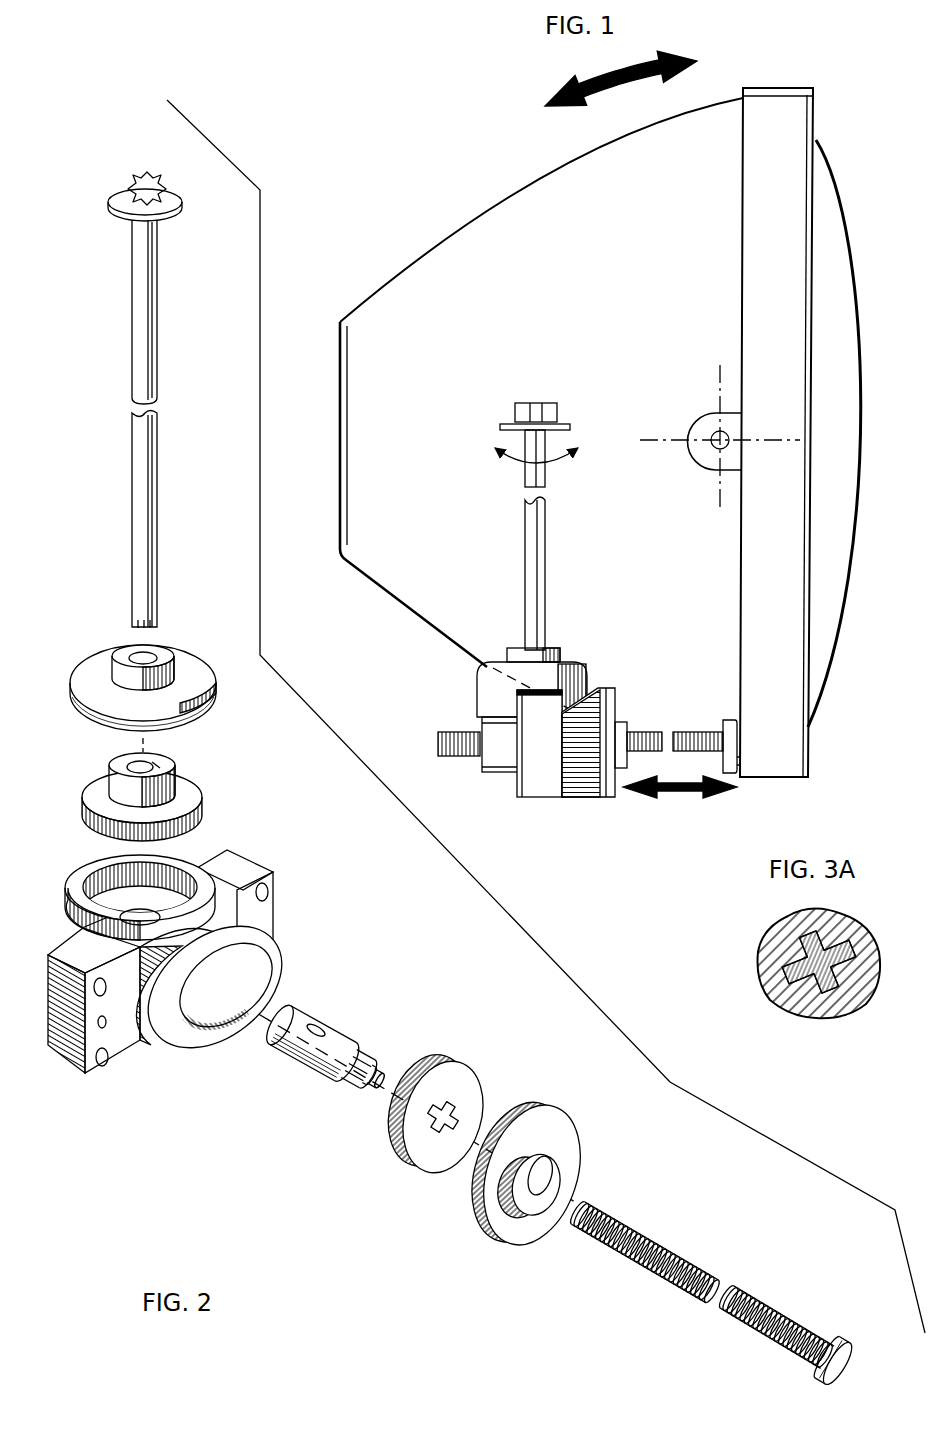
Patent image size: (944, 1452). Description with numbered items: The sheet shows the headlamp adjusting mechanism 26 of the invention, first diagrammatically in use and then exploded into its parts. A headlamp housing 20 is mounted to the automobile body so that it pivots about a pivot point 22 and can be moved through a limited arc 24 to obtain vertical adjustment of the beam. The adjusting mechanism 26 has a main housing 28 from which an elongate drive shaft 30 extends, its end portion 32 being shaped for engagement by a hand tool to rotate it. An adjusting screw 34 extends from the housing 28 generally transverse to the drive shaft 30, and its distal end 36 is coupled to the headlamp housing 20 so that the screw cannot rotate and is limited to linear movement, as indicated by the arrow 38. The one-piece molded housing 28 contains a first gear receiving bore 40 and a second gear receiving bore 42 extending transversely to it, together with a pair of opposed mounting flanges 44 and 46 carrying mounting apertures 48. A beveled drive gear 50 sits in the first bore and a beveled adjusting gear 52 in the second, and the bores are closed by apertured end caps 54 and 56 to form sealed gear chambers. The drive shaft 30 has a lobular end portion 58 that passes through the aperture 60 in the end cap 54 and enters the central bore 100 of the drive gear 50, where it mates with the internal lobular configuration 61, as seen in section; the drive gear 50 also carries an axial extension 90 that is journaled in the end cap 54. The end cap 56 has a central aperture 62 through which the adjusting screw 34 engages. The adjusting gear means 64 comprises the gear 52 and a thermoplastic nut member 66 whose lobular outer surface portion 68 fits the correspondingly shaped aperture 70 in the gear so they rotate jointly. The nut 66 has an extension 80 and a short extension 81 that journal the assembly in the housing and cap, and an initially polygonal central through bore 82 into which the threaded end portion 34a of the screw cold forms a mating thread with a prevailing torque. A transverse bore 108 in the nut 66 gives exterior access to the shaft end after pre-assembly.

In FIG. 1, the headlamp housing 20 is at (700, 126).
In FIG. 1, the pivot point 22 is at (722, 436).
In FIG. 1, the limited arc 24 is at (689, 60).
In FIG. 1, the adjusting mechanism 26 is at (601, 664).
In FIG. 2, the adjusting mechanism 26 is at (125, 1132).
In FIG. 1, the main housing 28 is at (580, 800).
In FIG. 2, the main housing 28 is at (268, 862).
In FIG. 1, the drive shaft 30 is at (548, 522).
In FIG. 2, the drive shaft 30 is at (152, 358).
In FIG. 3A, the drive shaft 30 is at (797, 957).
In FIG. 1, the end portion 32 is at (540, 400).
In FIG. 2, the end portion 32 is at (135, 185).
In FIG. 1, the adjusting screw 34 is at (693, 733).
In FIG. 2, the adjusting screw 34 is at (718, 1262).
In FIG. 2, the threaded end portion 34a is at (655, 1245).
In FIG. 1, the distal end 36 is at (738, 778).
In FIG. 2, the distal end 36 is at (850, 1350).
In FIG. 1, the arrow 38 is at (672, 795).
In FIG. 2, the first gear receiving bore 40 is at (100, 885).
In FIG. 2, the second gear receiving bore 42 is at (260, 957).
In FIG. 1, the mounting flange 44 is at (522, 786).
In FIG. 2, the mounting flange 44 is at (66, 1025).
In FIG. 2, the mounting flange 46 is at (272, 905).
In FIG. 2, the mounting apertures 48 is at (105, 992).
In FIG. 2, the drive gear 50 is at (190, 790).
In FIG. 3A, the drive gear 50 is at (846, 1000).
In FIG. 2, the adjusting gear 52 is at (455, 1080).
In FIG. 1, the end cap 54 is at (560, 650).
In FIG. 2, the end cap 54 is at (196, 692).
In FIG. 1, the end cap 56 is at (612, 690).
In FIG. 2, the end cap 56 is at (560, 1132).
In FIG. 2, the lobular end portion 58 is at (150, 622).
In FIG. 3A, the lobular end portion 58 is at (838, 940).
In FIG. 2, the aperture 60 is at (135, 655).
In FIG. 3A, the internal lobular configuration 61 is at (795, 1000).
In FIG. 2, the central aperture 62 is at (560, 1190).
In FIG. 2, the adjusting gear means 64 is at (385, 1037).
In FIG. 2, the nut member 66 is at (308, 1002).
In FIG. 2, the lobular outer surface portion 68 is at (330, 1085).
In FIG. 2, the aperture 70 is at (397, 1193).
In FIG. 2, the extension 80 is at (277, 1055).
In FIG. 2, the short extension 81 is at (355, 1095).
In FIG. 2, the central through bore 82 is at (375, 1092).
In FIG. 2, the axial extension 90 is at (170, 770).
In FIG. 2, the central bore 100 is at (130, 770).
In FIG. 2, the transverse bore 108 is at (320, 1030).